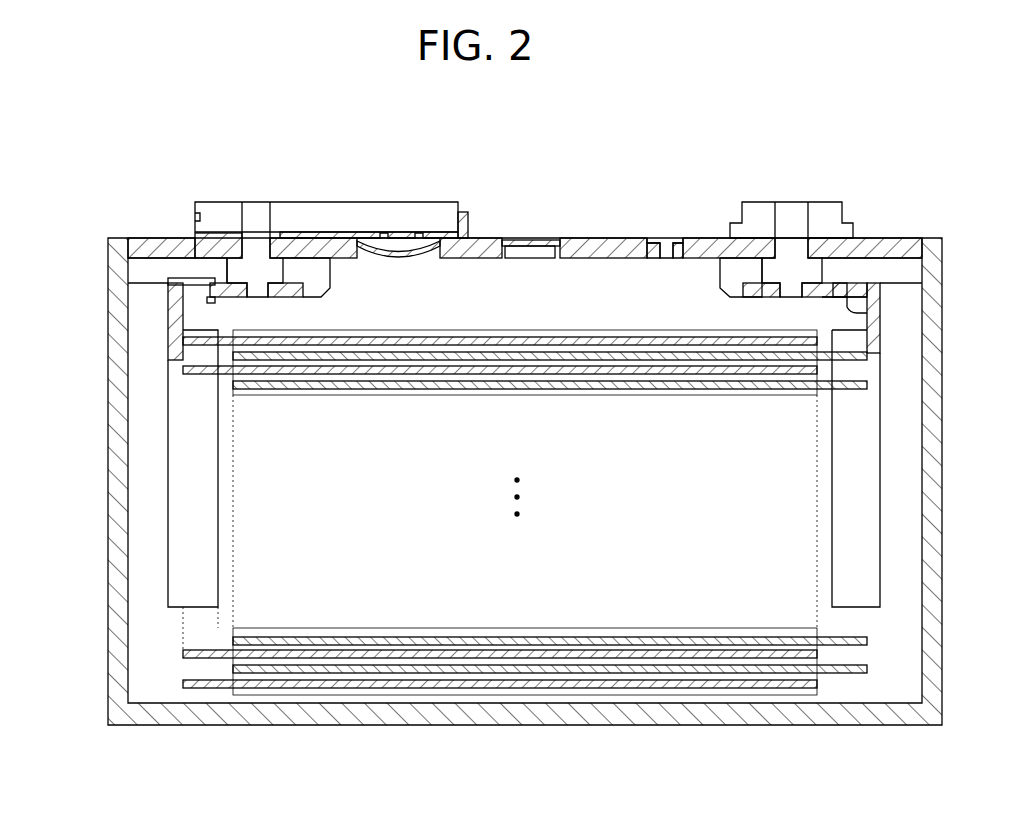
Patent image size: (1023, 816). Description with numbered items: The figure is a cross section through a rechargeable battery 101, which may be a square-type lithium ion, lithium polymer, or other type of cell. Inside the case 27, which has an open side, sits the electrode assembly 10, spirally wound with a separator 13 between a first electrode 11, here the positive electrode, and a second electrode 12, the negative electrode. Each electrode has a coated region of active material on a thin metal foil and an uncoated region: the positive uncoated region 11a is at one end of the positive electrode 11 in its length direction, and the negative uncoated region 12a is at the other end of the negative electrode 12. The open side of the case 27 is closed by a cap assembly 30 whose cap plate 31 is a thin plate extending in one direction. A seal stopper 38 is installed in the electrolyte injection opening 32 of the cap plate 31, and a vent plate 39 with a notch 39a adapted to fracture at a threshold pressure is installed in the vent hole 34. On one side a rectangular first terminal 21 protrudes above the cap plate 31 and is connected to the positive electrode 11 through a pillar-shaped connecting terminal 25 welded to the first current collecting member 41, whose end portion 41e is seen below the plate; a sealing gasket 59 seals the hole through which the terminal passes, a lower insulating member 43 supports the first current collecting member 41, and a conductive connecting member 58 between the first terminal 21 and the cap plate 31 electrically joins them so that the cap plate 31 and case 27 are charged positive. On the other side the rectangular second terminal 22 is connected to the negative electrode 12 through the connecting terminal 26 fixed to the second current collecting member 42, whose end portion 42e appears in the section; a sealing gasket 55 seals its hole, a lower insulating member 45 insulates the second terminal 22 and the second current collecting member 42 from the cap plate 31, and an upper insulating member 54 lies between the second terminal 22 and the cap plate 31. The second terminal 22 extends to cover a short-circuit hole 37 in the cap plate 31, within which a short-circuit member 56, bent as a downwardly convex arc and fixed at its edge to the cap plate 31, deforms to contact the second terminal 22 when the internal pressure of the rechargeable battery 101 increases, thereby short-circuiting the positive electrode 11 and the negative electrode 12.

The rechargeable battery 101 is at (580, 98).
The electrode assembly 10 is at (527, 553).
The first electrode 11 is at (552, 564).
The positive uncoated region 11a is at (850, 673).
The second electrode 12 is at (500, 557).
The negative uncoated region 12a is at (198, 688).
The separator 13 is at (525, 690).
The first terminal 21 is at (820, 210).
The second terminal 22 is at (220, 215).
The connecting terminal 25 is at (790, 215).
The connecting terminal 26 is at (258, 218).
The case 27 is at (930, 520).
The cap assembly 30 is at (534, 199).
The cap plate 31 is at (905, 240).
The electrolyte injection opening 32 is at (665, 251).
The vent hole 34 is at (546, 245).
The short-circuit hole 37 is at (396, 198).
The seal stopper 38 is at (665, 238).
The vent plate 39 is at (546, 212).
The notch 39a is at (530, 240).
The first current collecting member 41 is at (880, 400).
The positive tab bent portion 41e is at (875, 308).
The second current collecting member 42 is at (168, 345).
The negative tab bent portion 42e is at (198, 292).
The lower insulating member 43 is at (905, 275).
The lower insulating member 45 is at (145, 272).
The upper insulating member 54 is at (463, 214).
The sealing gasket 55 is at (205, 283).
The short-circuit member 56 is at (400, 250).
The connecting member 58 is at (855, 232).
The sealing gasket 59 is at (740, 260).